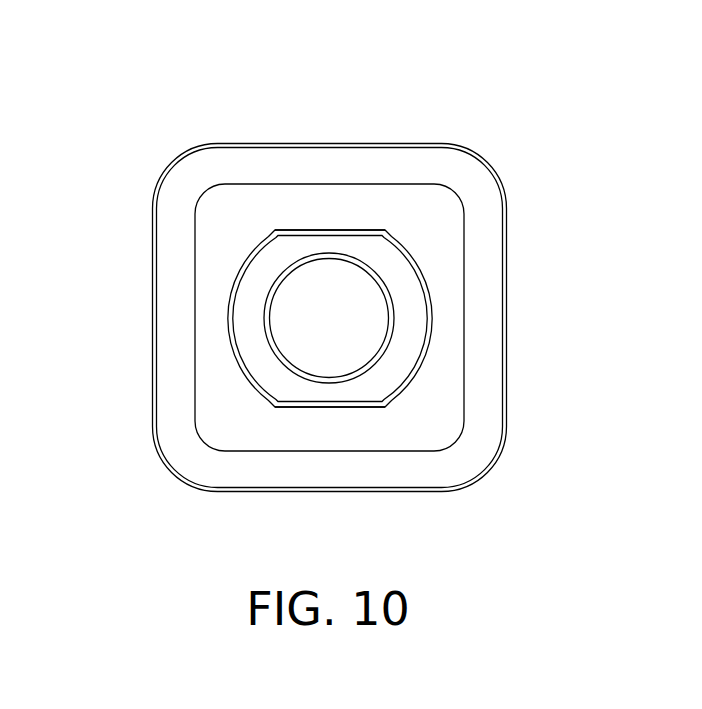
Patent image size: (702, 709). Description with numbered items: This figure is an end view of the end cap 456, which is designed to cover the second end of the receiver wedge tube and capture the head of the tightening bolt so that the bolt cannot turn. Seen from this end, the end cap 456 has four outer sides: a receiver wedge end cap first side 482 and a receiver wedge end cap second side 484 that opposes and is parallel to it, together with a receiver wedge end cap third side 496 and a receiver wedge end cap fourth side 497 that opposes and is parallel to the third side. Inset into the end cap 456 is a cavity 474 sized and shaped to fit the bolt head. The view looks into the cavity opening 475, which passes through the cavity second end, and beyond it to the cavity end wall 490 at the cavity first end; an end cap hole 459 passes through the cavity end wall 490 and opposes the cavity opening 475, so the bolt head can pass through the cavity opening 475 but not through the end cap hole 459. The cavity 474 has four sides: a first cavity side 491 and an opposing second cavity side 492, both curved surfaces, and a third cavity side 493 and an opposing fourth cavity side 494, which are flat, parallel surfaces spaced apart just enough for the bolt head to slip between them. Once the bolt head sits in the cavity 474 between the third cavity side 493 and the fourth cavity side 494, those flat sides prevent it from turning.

The end cap 456 is at (345, 66).
The receiver wedge end cap first side 482 is at (395, 144).
The receiver wedge end cap second side 484 is at (345, 492).
The cavity end wall 490 is at (383, 260).
The first cavity side 491 is at (433, 310).
The third cavity side 493 is at (332, 230).
The fourth cavity side 494 is at (290, 407).
The end cap hole 459 is at (363, 335).
The cavity 474 is at (259, 240).
The cavity opening 475 is at (227, 355).
The second cavity side 492 is at (227, 298).
The receiver wedge end cap third side 496 is at (506, 373).
The receiver wedge end cap fourth side 497 is at (153, 398).